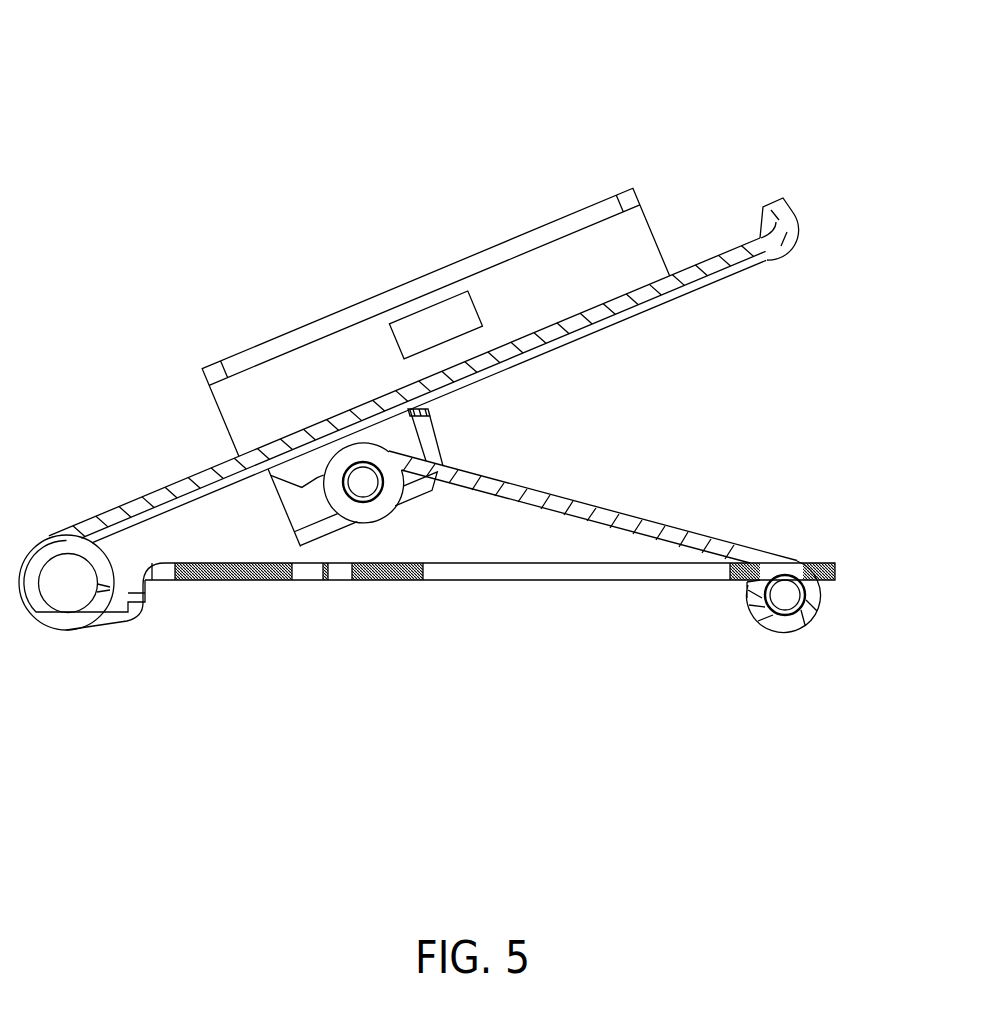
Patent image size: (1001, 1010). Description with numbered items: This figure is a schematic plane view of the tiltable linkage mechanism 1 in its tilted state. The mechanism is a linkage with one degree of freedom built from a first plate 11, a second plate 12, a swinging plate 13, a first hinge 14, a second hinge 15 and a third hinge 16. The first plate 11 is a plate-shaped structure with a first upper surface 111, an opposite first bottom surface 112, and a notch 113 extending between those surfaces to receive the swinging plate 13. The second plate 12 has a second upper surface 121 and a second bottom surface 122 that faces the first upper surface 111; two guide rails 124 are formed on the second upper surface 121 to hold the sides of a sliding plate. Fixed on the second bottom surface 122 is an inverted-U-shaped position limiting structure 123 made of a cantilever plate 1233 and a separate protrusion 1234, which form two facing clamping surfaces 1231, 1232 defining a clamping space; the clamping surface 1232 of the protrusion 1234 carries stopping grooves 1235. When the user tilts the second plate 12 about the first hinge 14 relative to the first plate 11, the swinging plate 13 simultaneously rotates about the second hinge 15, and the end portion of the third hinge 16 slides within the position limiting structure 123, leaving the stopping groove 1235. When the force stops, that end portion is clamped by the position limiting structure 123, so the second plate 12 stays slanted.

The tiltable linkage mechanism 1 is at (457, 253).
The first plate 11 is at (105, 617).
The second plate 12 is at (792, 216).
The swinging plate 13 is at (662, 526).
The first hinge 14 is at (67, 583).
The second hinge 15 is at (786, 598).
The third hinge 16 is at (367, 483).
The first upper surface 111 is at (557, 565).
The first bottom surface 112 is at (622, 578).
The notch 113 is at (493, 572).
The second upper surface 121 is at (707, 256).
The second bottom surface 122 is at (720, 281).
The position limiting structure 123 is at (432, 431).
The guide rail 124 is at (588, 215).
The clamping surface 1231 is at (414, 497).
The clamping surface 1232 is at (300, 492).
The cantilever plate 1233 is at (328, 541).
The protrusion 1234 is at (294, 476).
The stopping groove 1235 is at (322, 472).